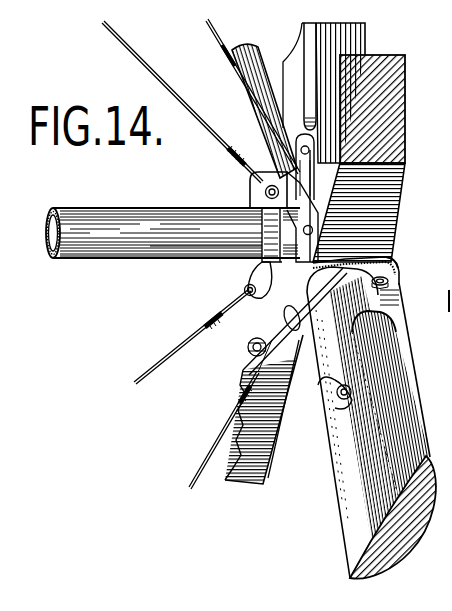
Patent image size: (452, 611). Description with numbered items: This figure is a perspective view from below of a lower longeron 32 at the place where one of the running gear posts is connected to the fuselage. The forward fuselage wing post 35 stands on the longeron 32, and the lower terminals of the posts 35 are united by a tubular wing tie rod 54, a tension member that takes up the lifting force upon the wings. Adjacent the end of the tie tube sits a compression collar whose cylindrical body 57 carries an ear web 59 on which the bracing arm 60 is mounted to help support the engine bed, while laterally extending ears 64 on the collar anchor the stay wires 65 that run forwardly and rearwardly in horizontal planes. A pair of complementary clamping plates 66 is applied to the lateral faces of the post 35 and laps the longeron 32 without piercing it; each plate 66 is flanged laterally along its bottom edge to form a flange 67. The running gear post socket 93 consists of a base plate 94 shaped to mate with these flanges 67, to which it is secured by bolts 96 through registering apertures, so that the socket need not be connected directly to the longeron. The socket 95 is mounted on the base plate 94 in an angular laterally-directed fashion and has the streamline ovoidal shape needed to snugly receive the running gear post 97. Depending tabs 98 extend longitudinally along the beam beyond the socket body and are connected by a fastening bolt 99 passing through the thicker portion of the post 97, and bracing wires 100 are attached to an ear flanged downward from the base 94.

The lower longeron 32 is at (402, 147).
The forward fuselage wing post 35 is at (357, 32).
The tubular wing tie rod 54 is at (88, 200).
The compression collar body 57 is at (222, 248).
The ear web 59 is at (258, 205).
The bracing arm 60 is at (247, 68).
The laterally extending ear 64 is at (255, 265).
The stay wire 65 is at (208, 33).
The clamping plate 66 is at (307, 148).
The flange 67 is at (380, 250).
The socket 93 is at (263, 375).
The base plate 94 is at (390, 258).
The socket 95 is at (377, 312).
The bolt 96 is at (393, 278).
The running gear post 97 is at (410, 432).
The depending tab 98 is at (313, 435).
The fastening bolt 99 is at (350, 392).
The bracing wire 100 is at (200, 470).